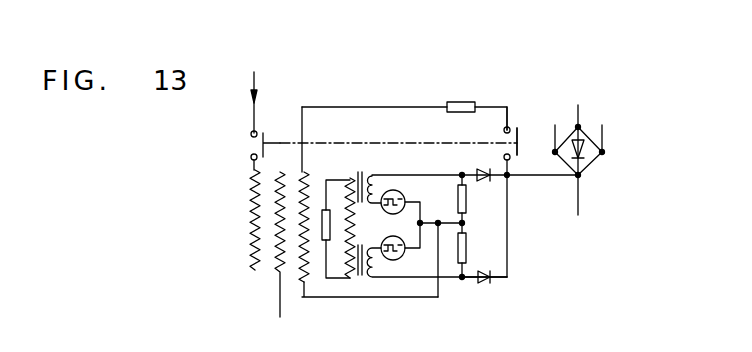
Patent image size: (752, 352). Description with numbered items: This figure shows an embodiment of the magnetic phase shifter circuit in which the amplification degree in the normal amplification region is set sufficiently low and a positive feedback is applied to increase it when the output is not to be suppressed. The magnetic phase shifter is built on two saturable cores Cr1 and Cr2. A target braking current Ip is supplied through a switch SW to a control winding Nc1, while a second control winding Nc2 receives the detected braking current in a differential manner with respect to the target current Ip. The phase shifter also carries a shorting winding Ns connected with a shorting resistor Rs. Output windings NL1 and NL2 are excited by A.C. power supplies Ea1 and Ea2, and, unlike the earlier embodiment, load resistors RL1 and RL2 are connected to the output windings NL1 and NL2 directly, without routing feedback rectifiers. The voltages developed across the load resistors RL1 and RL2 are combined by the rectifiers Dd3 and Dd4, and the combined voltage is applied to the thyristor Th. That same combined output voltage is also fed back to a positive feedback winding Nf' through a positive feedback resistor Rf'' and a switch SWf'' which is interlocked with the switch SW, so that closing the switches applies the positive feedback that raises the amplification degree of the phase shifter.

The target braking current Ip is at (264, 102).
The switch SW is at (252, 143).
The control winding Nc1 is at (251, 232).
The control winding Nc2 is at (272, 252).
The positive feedback winding Nf' is at (306, 249).
The shorting resistor Rs is at (312, 208).
The shorting winding Ns is at (353, 226).
The saturable core Cr1 is at (359, 180).
The saturable core Cr2 is at (359, 280).
The output winding NL1 is at (375, 183).
The output winding NL2 is at (375, 273).
The A.C. power supply Ea1 is at (404, 194).
The A.C. power supply Ea2 is at (404, 257).
The load resistor RL1 is at (466, 196).
The load resistor RL2 is at (466, 251).
The rectifier Dd3 is at (492, 168).
The rectifier Dd4 is at (483, 283).
The positive feedback resistor Rf'' is at (472, 87).
The switch SWf'' is at (534, 121).
The thyristor Th is at (590, 177).